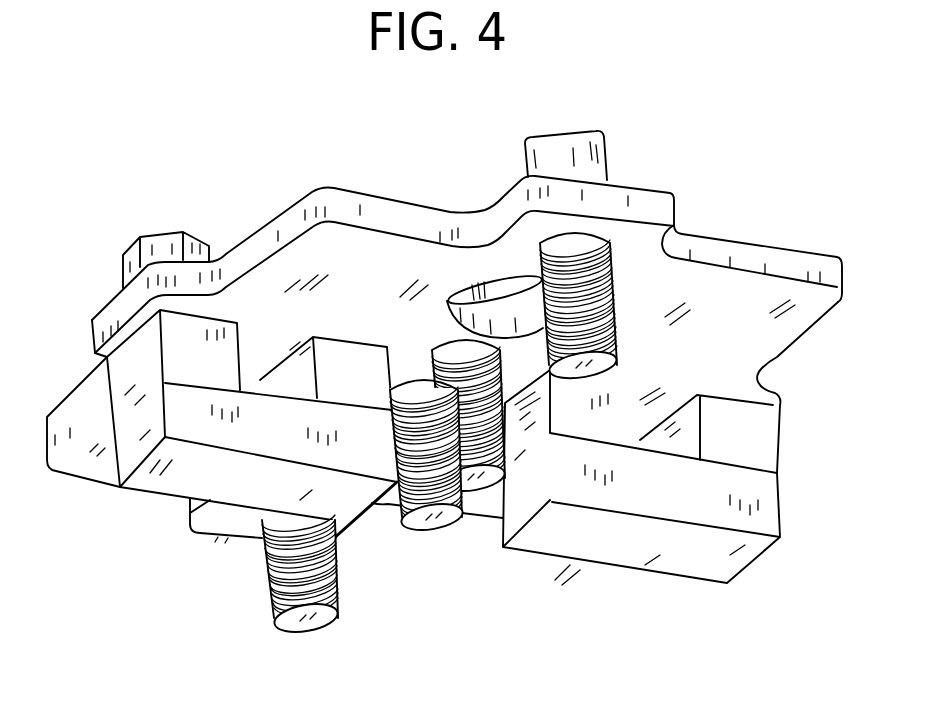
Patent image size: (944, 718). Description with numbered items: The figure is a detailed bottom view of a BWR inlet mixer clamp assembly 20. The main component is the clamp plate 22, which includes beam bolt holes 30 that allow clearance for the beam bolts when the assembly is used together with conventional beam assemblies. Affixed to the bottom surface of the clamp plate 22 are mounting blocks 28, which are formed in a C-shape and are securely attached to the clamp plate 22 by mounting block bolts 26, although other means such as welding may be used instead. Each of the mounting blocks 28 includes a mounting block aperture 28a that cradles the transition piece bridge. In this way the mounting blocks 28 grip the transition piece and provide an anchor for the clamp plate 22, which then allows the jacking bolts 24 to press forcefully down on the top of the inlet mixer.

The clamp assembly 20 is at (805, 168).
The clamp plate 22 is at (842, 271).
The jacking bolts 24 is at (310, 620).
The mounting block bolts 26 is at (163, 238).
The mounting blocks 28 is at (130, 427).
The mounting block apertures 28a is at (250, 348).
The beam bolt holes 30 is at (508, 283).